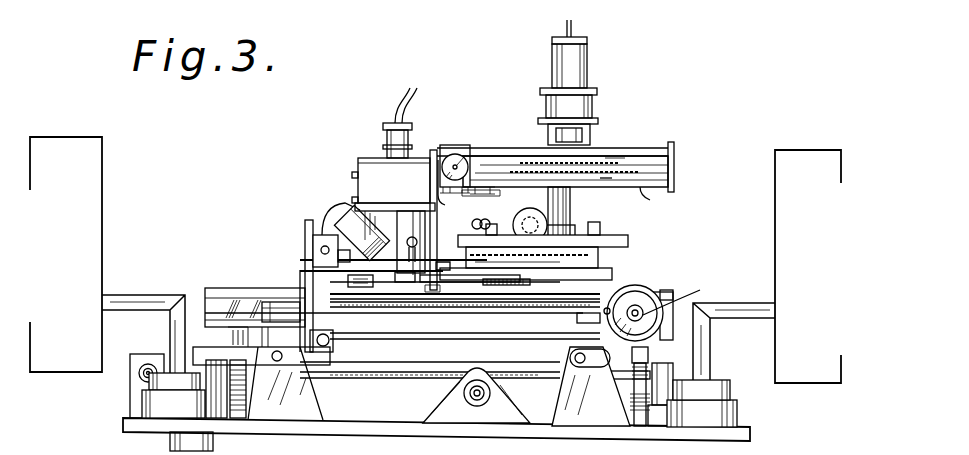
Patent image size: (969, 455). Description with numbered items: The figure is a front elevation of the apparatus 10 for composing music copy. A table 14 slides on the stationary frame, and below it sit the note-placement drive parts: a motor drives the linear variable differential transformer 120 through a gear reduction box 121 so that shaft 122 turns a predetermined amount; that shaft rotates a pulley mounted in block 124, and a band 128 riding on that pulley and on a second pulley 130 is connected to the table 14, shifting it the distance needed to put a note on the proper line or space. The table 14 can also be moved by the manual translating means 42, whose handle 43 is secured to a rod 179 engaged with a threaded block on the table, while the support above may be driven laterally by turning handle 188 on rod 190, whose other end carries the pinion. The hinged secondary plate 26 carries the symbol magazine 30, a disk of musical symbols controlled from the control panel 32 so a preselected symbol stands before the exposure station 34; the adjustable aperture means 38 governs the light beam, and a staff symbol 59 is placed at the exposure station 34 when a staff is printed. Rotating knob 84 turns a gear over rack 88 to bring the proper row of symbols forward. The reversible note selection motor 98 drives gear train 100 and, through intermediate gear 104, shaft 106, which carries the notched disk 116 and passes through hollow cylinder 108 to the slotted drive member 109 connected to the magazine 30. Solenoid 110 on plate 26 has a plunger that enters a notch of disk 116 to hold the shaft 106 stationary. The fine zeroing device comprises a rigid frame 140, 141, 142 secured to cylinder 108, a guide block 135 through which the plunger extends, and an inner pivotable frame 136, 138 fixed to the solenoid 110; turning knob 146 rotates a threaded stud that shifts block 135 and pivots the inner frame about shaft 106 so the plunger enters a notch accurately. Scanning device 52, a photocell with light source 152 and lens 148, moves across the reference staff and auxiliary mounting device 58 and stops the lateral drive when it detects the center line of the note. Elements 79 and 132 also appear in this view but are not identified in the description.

The apparatus for composing music copy 10 is at (697, 428).
The table 14 is at (525, 297).
The secondary plate member 26 is at (305, 262).
The symbol magazine 30 is at (482, 290).
The control panel 32 is at (88, 229).
The exposure station 34 is at (438, 262).
The adjustable aperture means 38 is at (443, 294).
The manual translating means 42 is at (675, 299).
The manually operated handle 43 is at (630, 296).
The scanning device 52 is at (380, 178).
The auxiliary mounting device 58 is at (343, 207).
The staff symbol 59 is at (373, 281).
The housing wall 79 is at (775, 233).
The knob 84 is at (530, 222).
The rack 88 is at (484, 219).
The note selection motor 98 is at (572, 73).
The gear train 100 is at (620, 150).
The intermediate gear 104 is at (612, 180).
The shaft 106 is at (533, 160).
The hollow cylinder 108 is at (573, 210).
The drive member 109 is at (607, 237).
The solenoid 110 is at (383, 148).
The notched disk 116 is at (471, 190).
The linear variable differential transformer 120 is at (128, 426).
The gear reduction box 121 is at (135, 398).
The shaft 122 is at (421, 378).
The block 124 is at (221, 412).
The band 128 is at (439, 393).
The second pulley 130 is at (632, 373).
The shaft 132 is at (235, 339).
The guide block 135 is at (433, 150).
The inner pivotable frame member 136 is at (422, 148).
The inner pivotable frame member 138 is at (458, 190).
The rigid frame member 140 is at (640, 188).
The rigid frame member 141 is at (674, 176).
The rigid frame member 142 is at (614, 152).
The knob 146 is at (464, 157).
The lens 148 is at (427, 290).
The light source 152 is at (305, 231).
The rod 179 is at (697, 306).
The handle 188 is at (480, 402).
The rod 190 is at (492, 394).